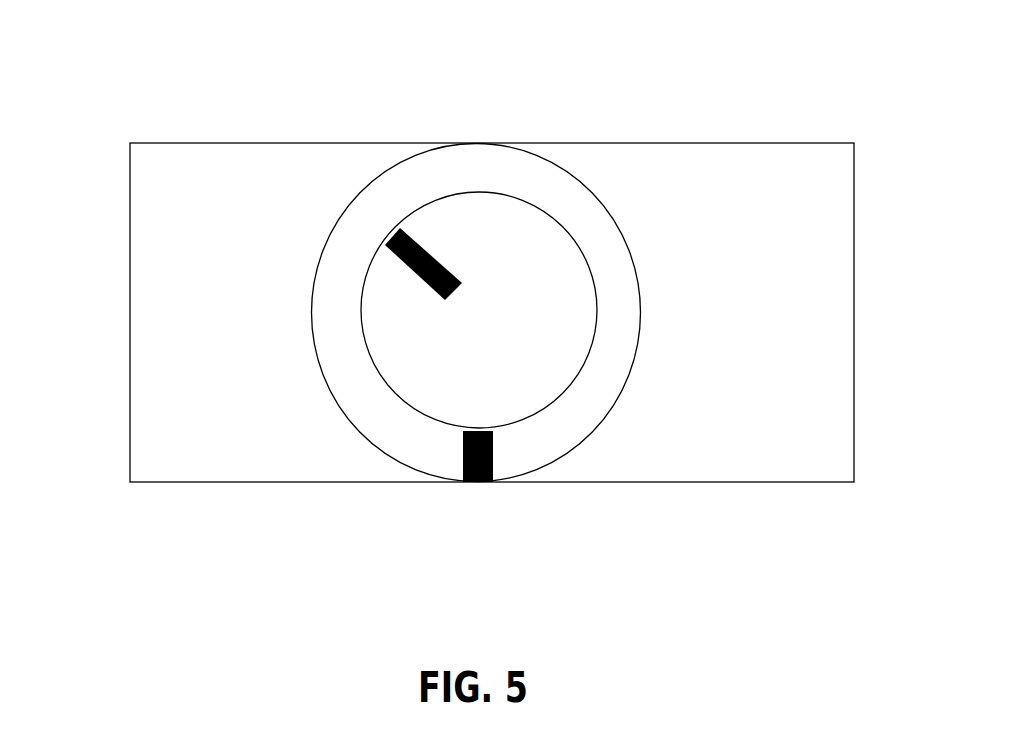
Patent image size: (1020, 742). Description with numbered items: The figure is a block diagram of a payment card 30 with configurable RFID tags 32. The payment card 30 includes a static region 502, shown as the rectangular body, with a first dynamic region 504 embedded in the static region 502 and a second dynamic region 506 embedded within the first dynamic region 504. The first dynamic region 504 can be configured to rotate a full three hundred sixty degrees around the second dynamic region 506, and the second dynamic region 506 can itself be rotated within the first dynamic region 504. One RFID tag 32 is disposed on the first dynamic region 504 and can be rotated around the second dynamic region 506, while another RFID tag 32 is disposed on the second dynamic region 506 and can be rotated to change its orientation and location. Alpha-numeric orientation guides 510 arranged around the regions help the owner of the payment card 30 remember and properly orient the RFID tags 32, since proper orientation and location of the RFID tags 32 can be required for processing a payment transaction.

The payment card 30 is at (130, 114).
The RFID tag 32 is at (428, 252).
The static region 502 is at (162, 254).
The first dynamic region 504 is at (542, 166).
The second dynamic region 506 is at (515, 239).
The alpha-numeric orientation guides 510 is at (619, 390).